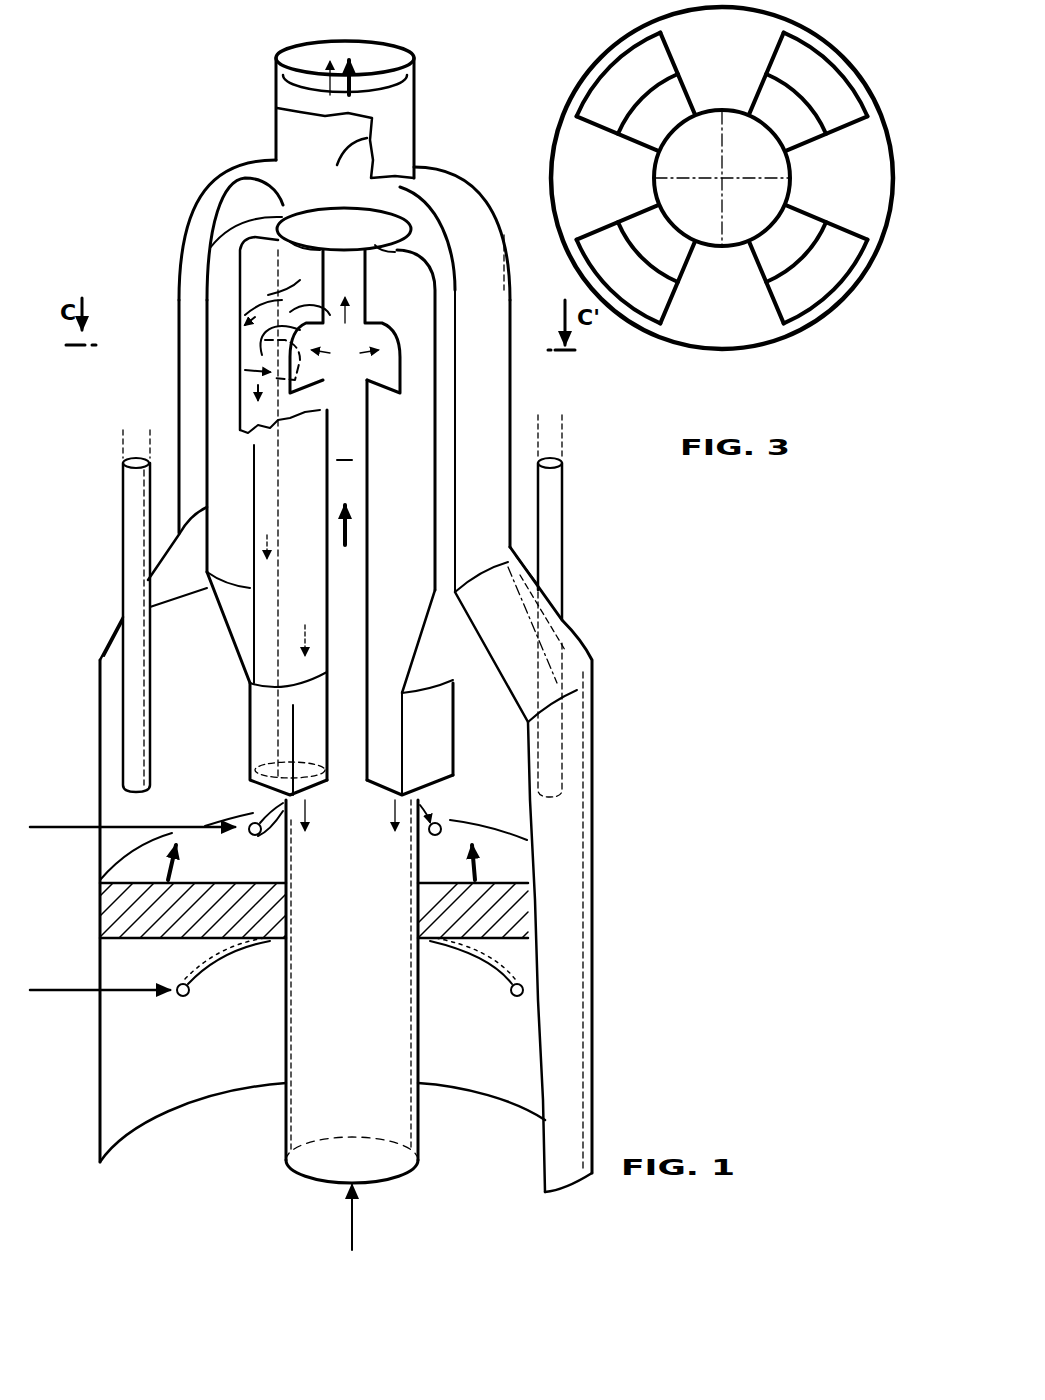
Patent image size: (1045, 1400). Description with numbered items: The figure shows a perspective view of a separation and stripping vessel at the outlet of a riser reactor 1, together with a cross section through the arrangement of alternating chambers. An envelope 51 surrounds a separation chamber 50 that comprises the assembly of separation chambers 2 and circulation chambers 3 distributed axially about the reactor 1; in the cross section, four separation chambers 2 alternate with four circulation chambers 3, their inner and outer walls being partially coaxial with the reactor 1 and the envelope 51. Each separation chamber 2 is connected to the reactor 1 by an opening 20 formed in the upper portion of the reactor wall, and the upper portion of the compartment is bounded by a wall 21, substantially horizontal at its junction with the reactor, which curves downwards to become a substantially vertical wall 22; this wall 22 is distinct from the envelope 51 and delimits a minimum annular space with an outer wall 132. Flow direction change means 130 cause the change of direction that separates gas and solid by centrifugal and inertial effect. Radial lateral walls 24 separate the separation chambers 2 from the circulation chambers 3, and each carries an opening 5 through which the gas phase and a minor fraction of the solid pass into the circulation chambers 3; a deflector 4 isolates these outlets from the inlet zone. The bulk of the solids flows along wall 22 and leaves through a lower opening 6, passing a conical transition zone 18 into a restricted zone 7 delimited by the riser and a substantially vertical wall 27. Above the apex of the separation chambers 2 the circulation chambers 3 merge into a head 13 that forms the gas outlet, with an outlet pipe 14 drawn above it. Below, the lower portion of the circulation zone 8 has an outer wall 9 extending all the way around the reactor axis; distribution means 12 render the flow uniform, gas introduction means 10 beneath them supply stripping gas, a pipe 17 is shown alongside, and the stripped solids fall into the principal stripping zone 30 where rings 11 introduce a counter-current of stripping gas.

In FIG. 1, the reactor 1 is at (300, 1128).
In FIG. 3, the reactor 1 is at (700, 171).
In FIG. 1, the separation chamber 2 is at (242, 410).
In FIG. 3, the separation chamber 2 is at (637, 294).
In FIG. 1, the circulation chamber 3 is at (198, 432).
In FIG. 3, the circulation chamber 3 is at (605, 191).
In FIG. 1, the deflector 4 is at (250, 314).
In FIG. 3, the deflector 4 is at (640, 252).
In FIG. 1, the opening 5 is at (345, 321).
In FIG. 3, the opening 5 is at (633, 205).
In FIG. 1, the opening 6 is at (312, 800).
In FIG. 1, the zone 7 is at (305, 748).
In FIG. 1, the lower portion of the circulation zone 8 is at (105, 760).
In FIG. 1, the outer wall 9 is at (100, 1095).
In FIG. 1, the means for introducing a gas 10 is at (256, 836).
In FIG. 1, the rings 11 is at (190, 995).
In FIG. 1, the means for distributing catalyst 12 is at (108, 910).
In FIG. 1, the head 13 is at (355, 145).
In FIG. 1, the outlet pipe 14 is at (404, 22).
In FIG. 1, the feed pipe 17 is at (130, 518).
In FIG. 1, the conical transition zone 18 is at (252, 642).
In FIG. 1, the opening 20 is at (290, 288).
In FIG. 1, the wall 21 is at (262, 199).
In FIG. 1, the wall 22 is at (447, 372).
In FIG. 3, the wall 22 is at (818, 318).
In FIG. 1, the lateral wall 24 is at (420, 387).
In FIG. 3, the lateral wall 24 is at (686, 305).
In FIG. 1, the wall 27 is at (268, 730).
In FIG. 1, the principal stripping zone 30 is at (125, 1052).
In FIG. 1, the separation chamber 50 is at (128, 380).
In FIG. 1, the envelope 51 is at (512, 318).
In FIG. 3, the envelope 51 is at (756, 328).
In FIG. 1, the flow direction change means 130 is at (250, 348).
In FIG. 3, the outer wall 132 is at (830, 315).